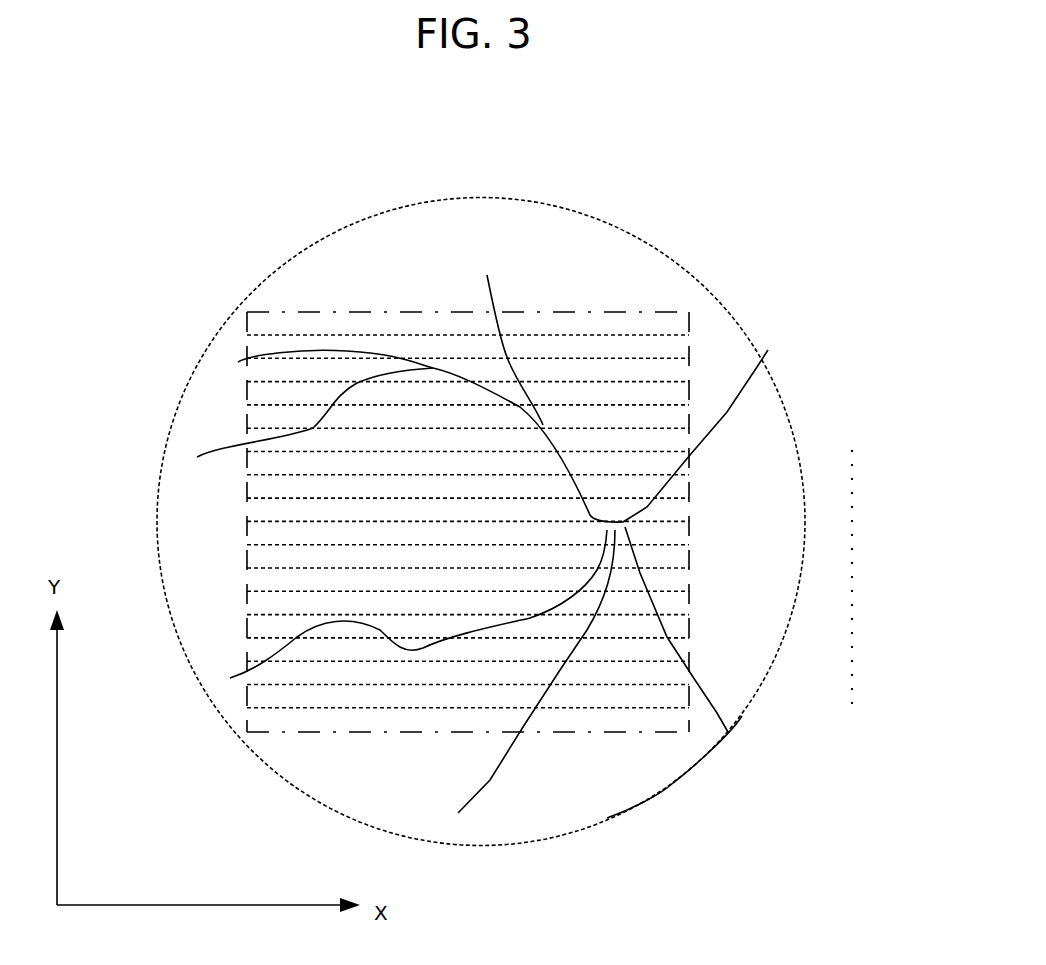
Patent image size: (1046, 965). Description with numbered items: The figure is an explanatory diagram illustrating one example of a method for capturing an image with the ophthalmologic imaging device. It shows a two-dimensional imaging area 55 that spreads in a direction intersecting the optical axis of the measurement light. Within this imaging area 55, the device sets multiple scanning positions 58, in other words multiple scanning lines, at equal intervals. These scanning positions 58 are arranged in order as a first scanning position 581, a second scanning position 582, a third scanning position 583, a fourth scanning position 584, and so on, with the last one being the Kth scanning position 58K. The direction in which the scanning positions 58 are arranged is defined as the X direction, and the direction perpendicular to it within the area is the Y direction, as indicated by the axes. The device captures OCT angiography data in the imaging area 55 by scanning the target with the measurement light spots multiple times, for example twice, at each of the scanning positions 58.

The two-dimensional imaging area 55 is at (388, 312).
The scanning positions 58 is at (878, 321).
The first scanning position 581 is at (689, 336).
The second scanning position 582 is at (689, 358).
The third scanning position 583 is at (689, 382).
The fourth scanning position 584 is at (689, 405).
The Kth scanning position 58K is at (690, 708).